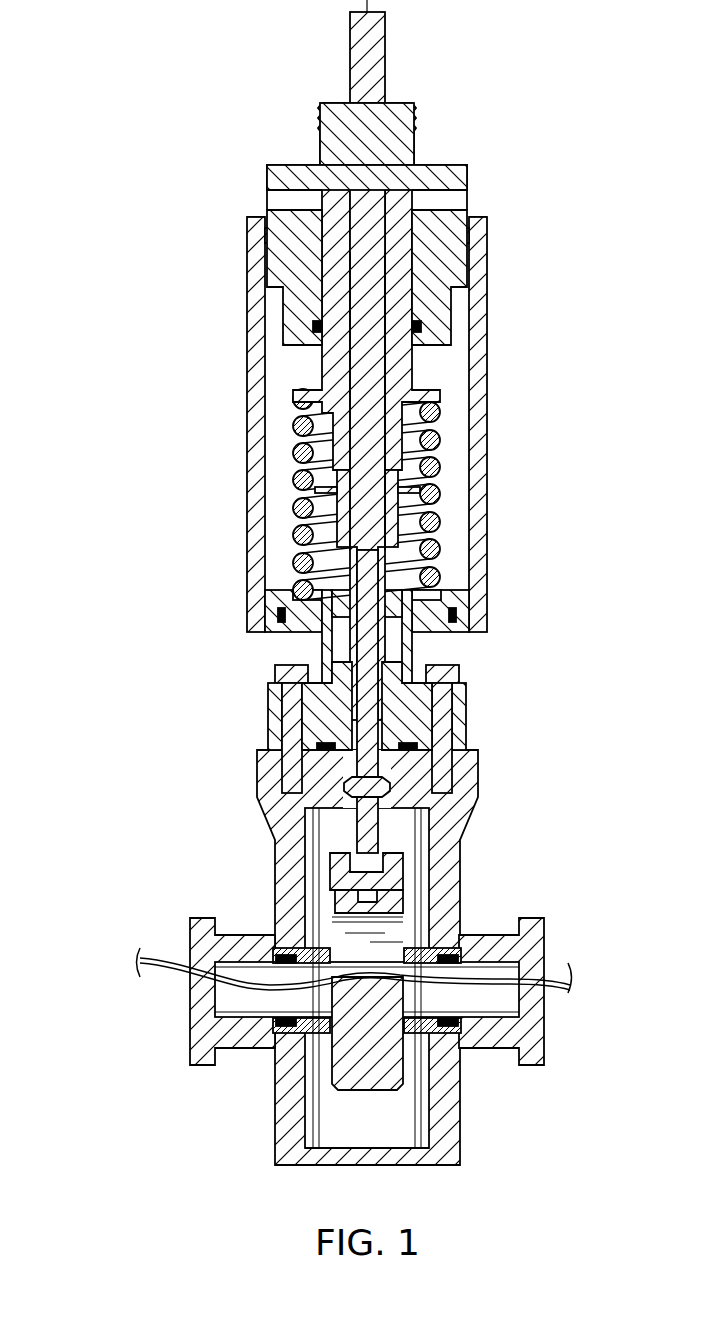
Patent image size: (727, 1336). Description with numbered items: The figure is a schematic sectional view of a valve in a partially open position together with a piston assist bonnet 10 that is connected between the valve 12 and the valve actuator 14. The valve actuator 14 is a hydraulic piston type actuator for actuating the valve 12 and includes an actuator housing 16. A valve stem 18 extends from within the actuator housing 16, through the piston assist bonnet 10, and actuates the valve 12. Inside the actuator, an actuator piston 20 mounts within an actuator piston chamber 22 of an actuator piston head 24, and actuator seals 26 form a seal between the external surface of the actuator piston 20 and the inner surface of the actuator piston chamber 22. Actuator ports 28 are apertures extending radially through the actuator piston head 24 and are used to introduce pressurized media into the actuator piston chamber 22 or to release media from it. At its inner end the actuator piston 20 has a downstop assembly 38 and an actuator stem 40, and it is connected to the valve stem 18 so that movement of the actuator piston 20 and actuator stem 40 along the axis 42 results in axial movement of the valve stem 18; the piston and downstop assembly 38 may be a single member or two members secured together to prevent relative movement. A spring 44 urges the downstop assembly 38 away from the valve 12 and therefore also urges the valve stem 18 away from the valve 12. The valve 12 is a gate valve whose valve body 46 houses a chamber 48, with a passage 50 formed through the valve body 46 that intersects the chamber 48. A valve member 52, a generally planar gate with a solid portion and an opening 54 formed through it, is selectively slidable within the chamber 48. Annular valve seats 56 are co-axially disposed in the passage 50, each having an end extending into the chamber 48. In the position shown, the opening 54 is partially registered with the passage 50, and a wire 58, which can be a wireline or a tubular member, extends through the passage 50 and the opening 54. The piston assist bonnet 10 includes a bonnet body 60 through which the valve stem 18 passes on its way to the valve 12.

The piston assist bonnet 10 is at (488, 713).
The valve 12 is at (190, 805).
The valve actuator 14 is at (172, 298).
The actuator housing 16 is at (490, 437).
The valve stem 18 is at (378, 660).
The actuator piston 20 is at (338, 278).
The actuator piston chamber 22 is at (408, 270).
The actuator piston head 24 is at (445, 323).
The actuator seals 26 is at (312, 323).
The actuator ports 28 is at (275, 203).
The downstop assembly 38 is at (277, 430).
The actuator stem 40 is at (357, 530).
The axis 42 is at (372, 42).
The spring 44 is at (340, 478).
The valve body 46 is at (273, 848).
The chamber 48 is at (393, 1113).
The passage 50 is at (220, 1017).
The valve member 52 is at (330, 1063).
The opening 54 is at (378, 937).
The annular valve seats 56 is at (285, 948).
The wire 58 is at (160, 960).
The bonnet body 60 is at (328, 673).